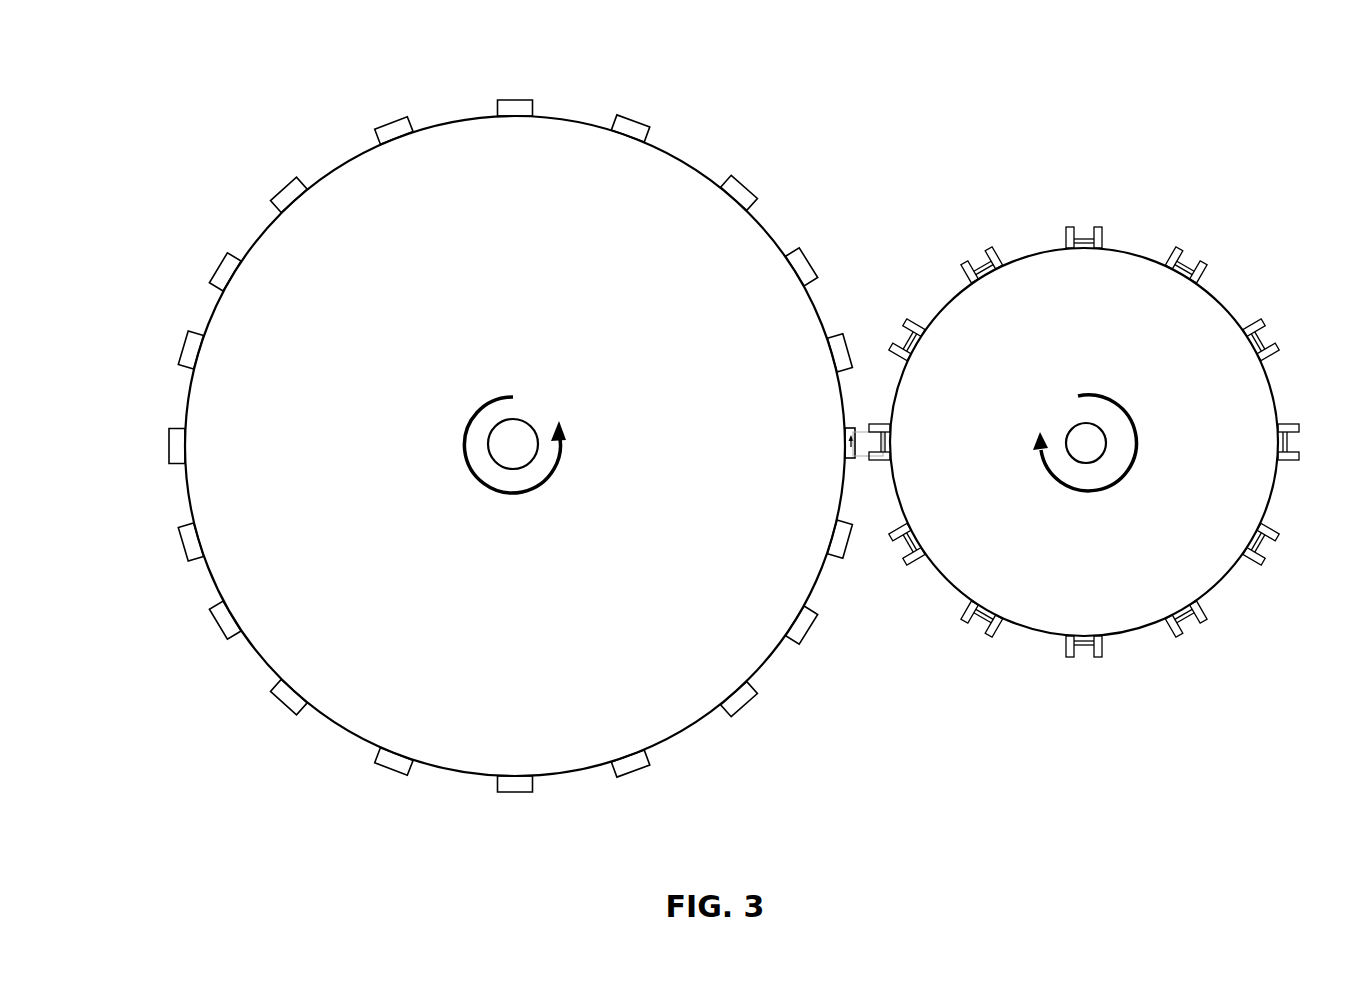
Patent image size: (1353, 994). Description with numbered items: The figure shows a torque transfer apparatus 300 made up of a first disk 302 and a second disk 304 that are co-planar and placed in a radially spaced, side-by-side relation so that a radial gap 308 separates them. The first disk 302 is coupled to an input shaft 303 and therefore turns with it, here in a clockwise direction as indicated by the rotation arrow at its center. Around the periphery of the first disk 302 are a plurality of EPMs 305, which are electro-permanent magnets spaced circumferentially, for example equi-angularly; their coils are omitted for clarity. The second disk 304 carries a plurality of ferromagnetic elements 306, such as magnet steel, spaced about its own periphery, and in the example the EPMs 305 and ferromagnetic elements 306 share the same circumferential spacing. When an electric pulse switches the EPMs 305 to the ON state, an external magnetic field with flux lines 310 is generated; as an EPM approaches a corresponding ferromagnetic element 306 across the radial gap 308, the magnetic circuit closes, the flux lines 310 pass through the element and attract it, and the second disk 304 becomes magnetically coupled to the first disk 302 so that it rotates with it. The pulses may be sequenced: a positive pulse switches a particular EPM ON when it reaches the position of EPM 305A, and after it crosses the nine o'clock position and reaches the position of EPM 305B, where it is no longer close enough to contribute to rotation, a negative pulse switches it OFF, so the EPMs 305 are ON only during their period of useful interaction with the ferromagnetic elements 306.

The torque transfer apparatus 300 is at (268, 110).
The first disk 302 is at (1034, 246).
The input shaft 303 is at (1078, 420).
The second disk 304 is at (578, 113).
The EPMs 305 is at (888, 430).
The EPM position 305A is at (906, 552).
The EPM position 305B is at (905, 337).
The ferromagnetic elements 306 is at (846, 432).
The radial gap 308 is at (865, 470).
The flux lines 310 is at (861, 431).